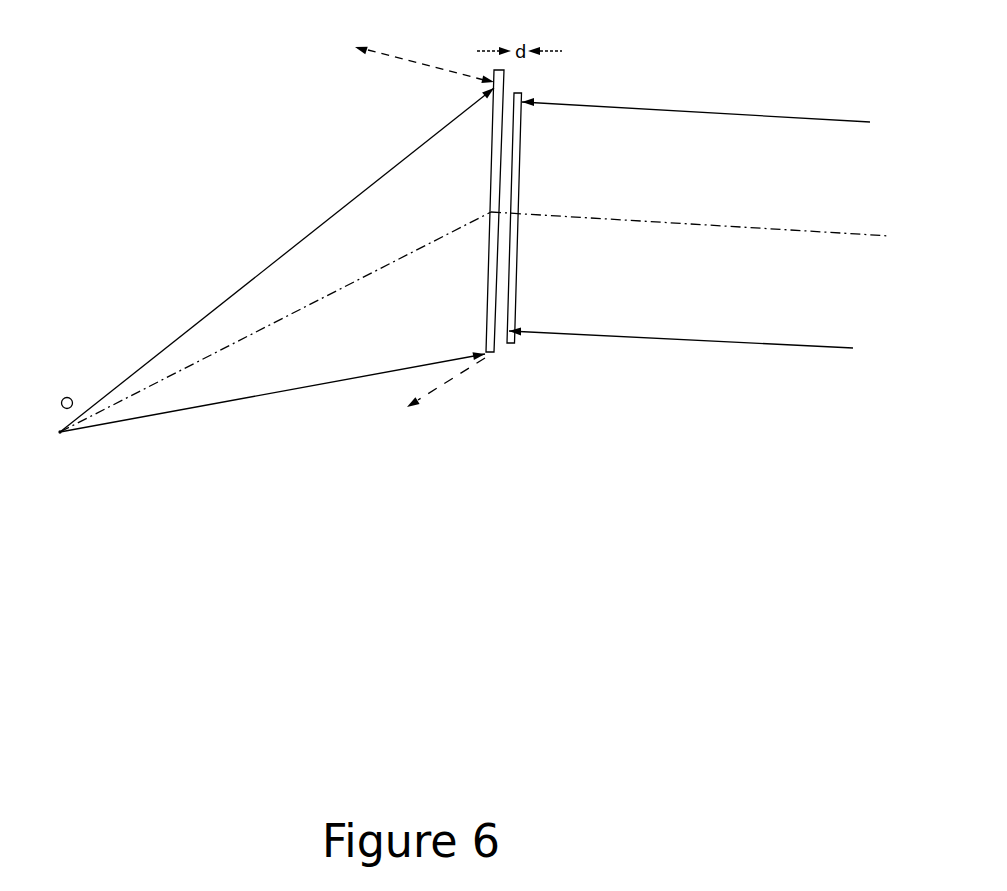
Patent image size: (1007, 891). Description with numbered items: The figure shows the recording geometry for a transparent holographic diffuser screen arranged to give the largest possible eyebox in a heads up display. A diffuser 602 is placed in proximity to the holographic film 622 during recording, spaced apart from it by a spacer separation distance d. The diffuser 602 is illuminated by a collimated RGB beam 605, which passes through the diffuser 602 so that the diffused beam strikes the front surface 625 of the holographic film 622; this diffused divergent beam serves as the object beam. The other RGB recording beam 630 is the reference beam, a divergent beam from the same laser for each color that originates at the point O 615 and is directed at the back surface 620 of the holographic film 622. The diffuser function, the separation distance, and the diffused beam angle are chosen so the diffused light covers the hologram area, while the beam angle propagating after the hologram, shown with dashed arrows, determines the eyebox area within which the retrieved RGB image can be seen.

The diffuser 602 is at (516, 123).
The collimated RGB beam 605 is at (665, 105).
The point O 615 is at (64, 438).
The back surface of holographic film 620 is at (490, 80).
The holographic film 622 is at (486, 363).
The front surface of holographic film 625 is at (495, 358).
The RGB recording beam 630 is at (175, 338).